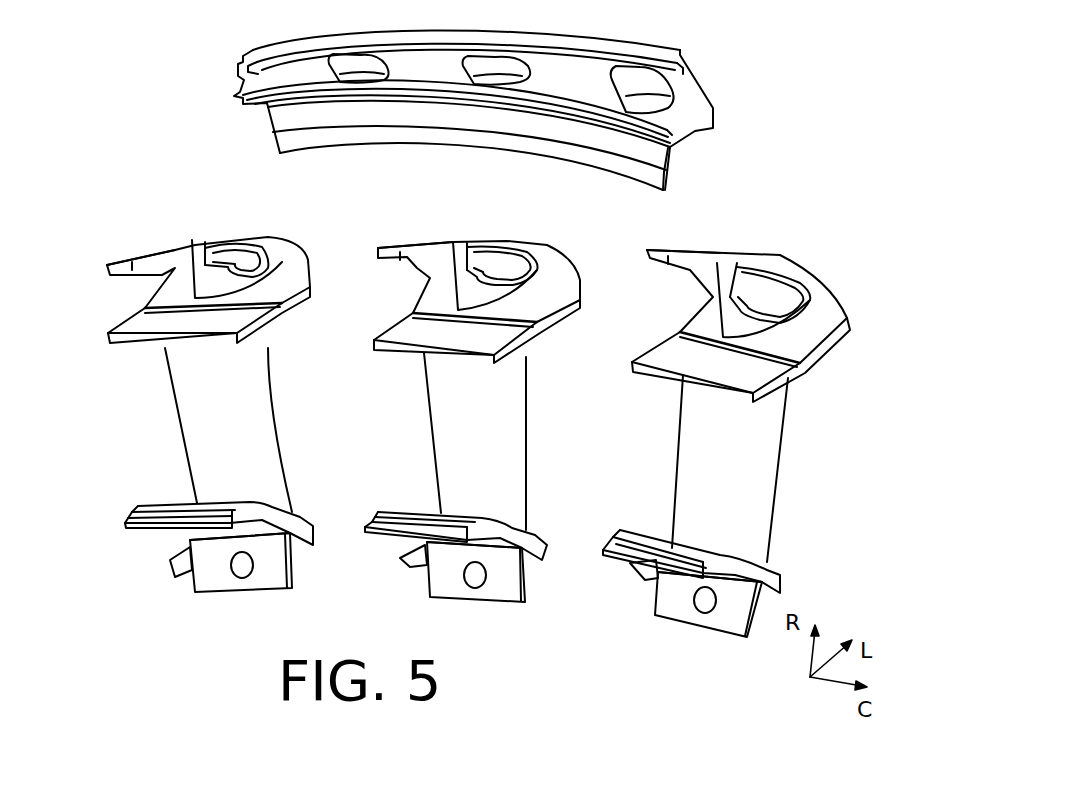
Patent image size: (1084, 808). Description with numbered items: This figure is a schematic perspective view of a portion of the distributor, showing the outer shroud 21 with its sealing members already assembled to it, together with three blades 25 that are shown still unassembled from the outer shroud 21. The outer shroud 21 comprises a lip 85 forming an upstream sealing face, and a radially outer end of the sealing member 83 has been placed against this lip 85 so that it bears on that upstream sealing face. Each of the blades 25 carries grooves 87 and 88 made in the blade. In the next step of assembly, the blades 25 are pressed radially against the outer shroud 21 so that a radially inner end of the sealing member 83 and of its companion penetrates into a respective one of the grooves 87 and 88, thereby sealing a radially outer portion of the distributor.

The outer shroud 21 is at (694, 58).
The sealing member 83 is at (655, 180).
The lip 85 is at (660, 158).
The blade 25 is at (173, 230).
The groove 87 is at (266, 290).
The groove 88 is at (132, 262).